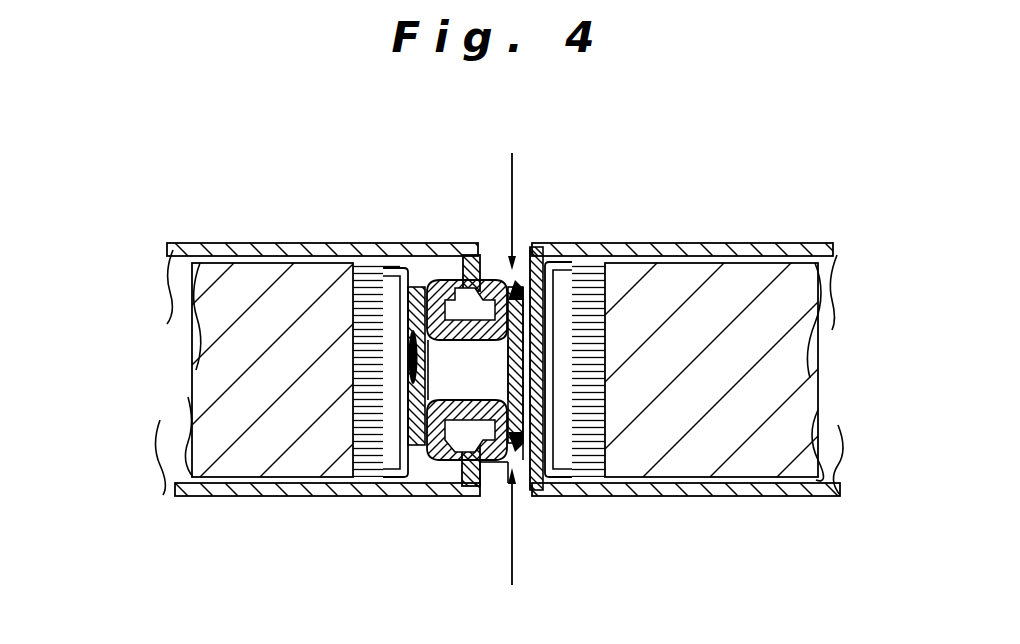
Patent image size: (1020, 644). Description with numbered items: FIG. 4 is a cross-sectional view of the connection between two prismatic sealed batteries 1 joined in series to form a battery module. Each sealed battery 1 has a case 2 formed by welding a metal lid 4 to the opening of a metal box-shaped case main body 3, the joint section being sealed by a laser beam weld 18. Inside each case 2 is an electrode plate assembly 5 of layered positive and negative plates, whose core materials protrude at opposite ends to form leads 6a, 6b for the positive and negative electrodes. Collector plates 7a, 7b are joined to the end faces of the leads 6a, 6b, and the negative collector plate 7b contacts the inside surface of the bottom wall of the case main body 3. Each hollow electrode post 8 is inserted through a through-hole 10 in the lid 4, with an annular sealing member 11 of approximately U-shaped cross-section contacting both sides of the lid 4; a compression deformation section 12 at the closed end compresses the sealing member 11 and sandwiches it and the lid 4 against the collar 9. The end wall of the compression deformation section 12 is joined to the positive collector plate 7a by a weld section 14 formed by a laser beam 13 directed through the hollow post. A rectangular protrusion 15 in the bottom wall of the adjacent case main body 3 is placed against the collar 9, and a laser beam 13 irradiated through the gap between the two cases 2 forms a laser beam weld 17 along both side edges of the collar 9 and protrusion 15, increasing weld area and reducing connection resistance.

The prismatic sealed battery 1 is at (180, 202).
The case 2 is at (233, 236).
The case main body 3 is at (303, 492).
The lid 4 is at (465, 462).
The electrode plate assembly 5 is at (236, 380).
The lead for the positive electrode 6a is at (372, 290).
The lead for the negative electrode 6b is at (590, 285).
The collector plate for the positive electrode 7a is at (404, 268).
The collector plate for the negative electrode 7b is at (548, 268).
The electrode post 8 is at (455, 382).
The collar 9 is at (490, 470).
The through-hole 10 is at (472, 262).
The sealing member 11 is at (445, 290).
The compression deformation section 12 is at (430, 445).
The laser beam 13 is at (513, 165).
The weld section 14 is at (407, 377).
The protrusion 15 is at (520, 440).
The laser beam weld 17 is at (520, 290).
The laser beam weld 18 is at (480, 465).